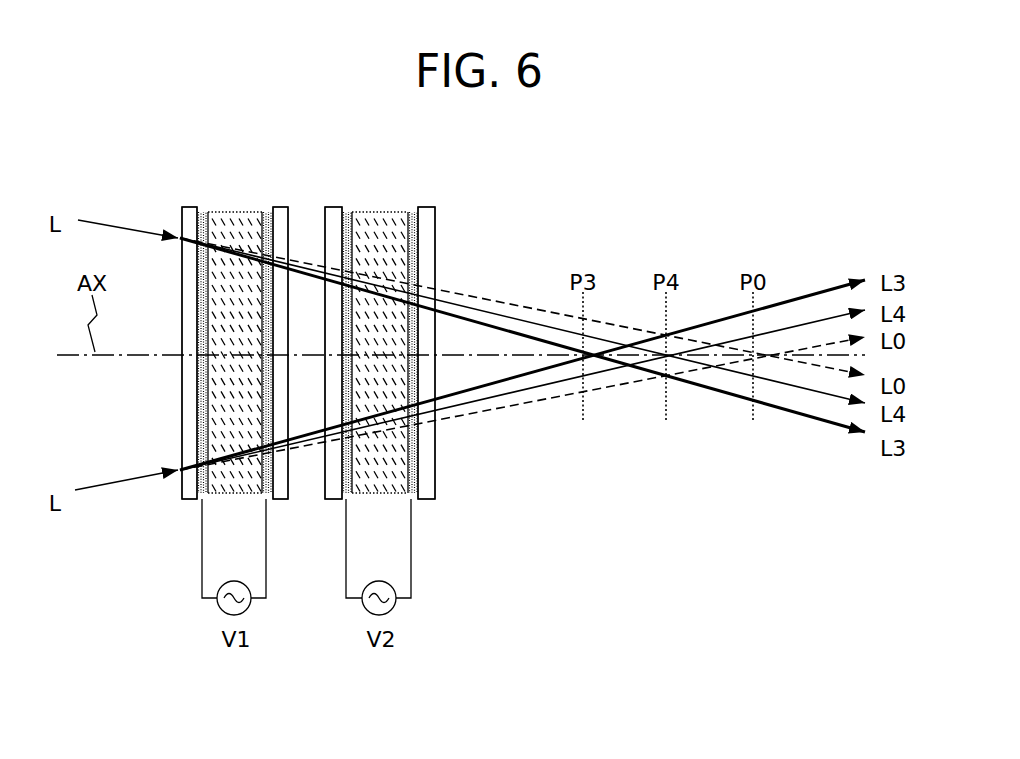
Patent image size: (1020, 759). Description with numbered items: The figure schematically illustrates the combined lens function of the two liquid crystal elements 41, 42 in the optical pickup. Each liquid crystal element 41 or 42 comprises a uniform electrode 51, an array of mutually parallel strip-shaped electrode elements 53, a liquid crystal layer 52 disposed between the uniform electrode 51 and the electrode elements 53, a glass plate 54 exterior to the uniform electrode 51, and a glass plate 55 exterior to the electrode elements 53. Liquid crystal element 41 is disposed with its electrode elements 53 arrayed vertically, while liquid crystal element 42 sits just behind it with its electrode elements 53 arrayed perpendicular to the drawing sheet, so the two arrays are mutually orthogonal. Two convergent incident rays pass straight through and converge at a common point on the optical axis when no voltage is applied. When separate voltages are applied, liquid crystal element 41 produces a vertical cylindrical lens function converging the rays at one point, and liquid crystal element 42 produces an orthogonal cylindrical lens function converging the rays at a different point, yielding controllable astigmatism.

The liquid crystal element 41 is at (237, 205).
The liquid crystal element 42 is at (377, 205).
The uniform electrode 51 is at (348, 215).
The liquid crystal layer 52 is at (228, 478).
The electrode elements 53 is at (267, 480).
The glass plate 54 is at (330, 218).
The glass plate 55 is at (279, 484).